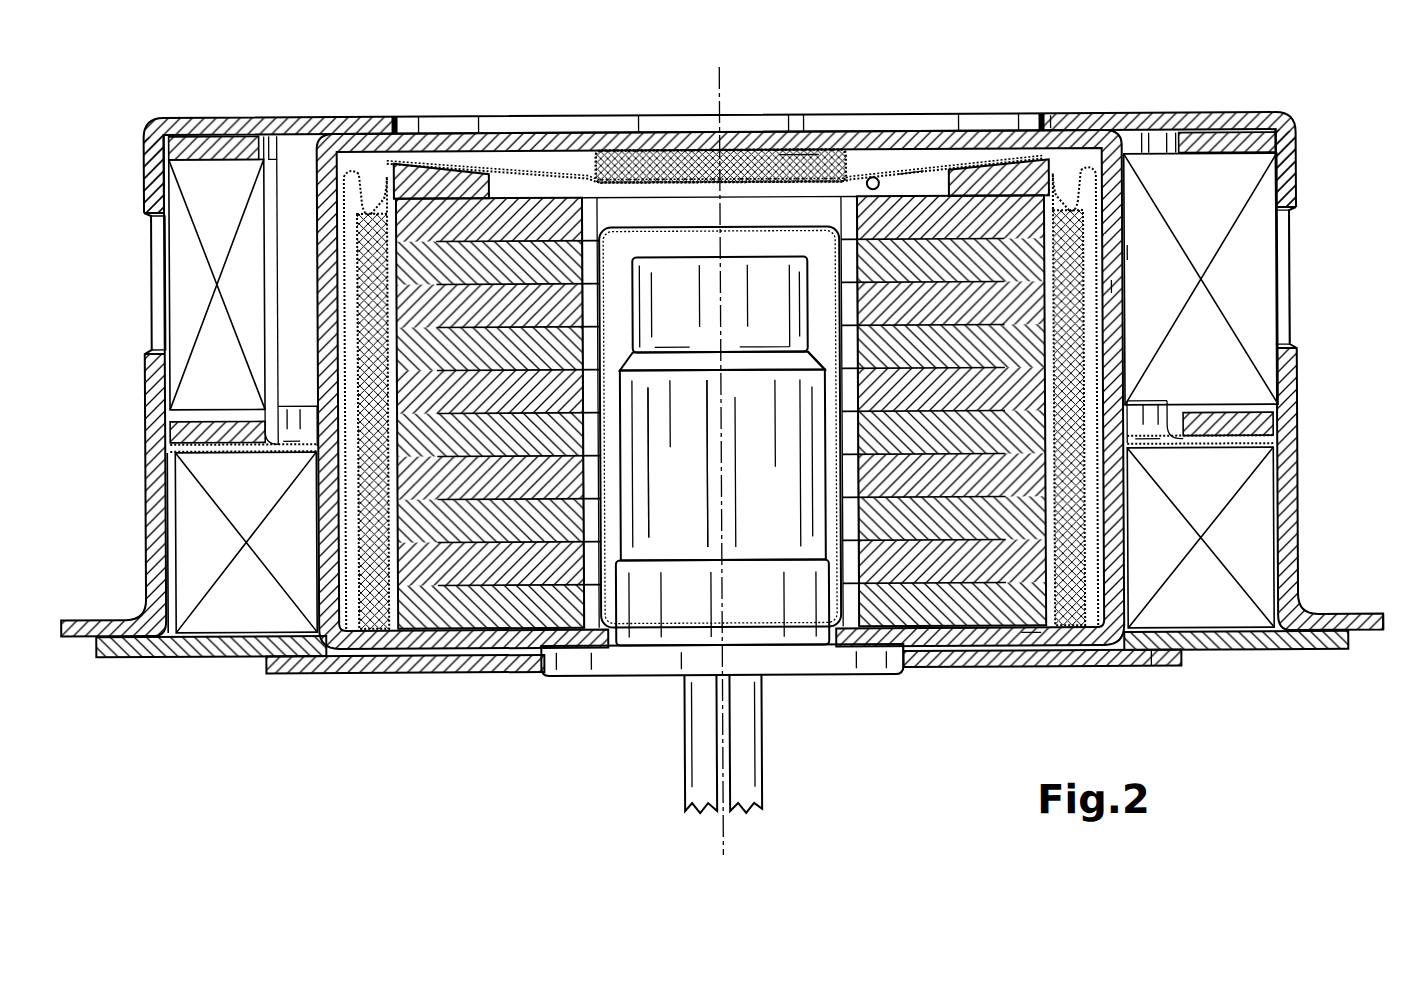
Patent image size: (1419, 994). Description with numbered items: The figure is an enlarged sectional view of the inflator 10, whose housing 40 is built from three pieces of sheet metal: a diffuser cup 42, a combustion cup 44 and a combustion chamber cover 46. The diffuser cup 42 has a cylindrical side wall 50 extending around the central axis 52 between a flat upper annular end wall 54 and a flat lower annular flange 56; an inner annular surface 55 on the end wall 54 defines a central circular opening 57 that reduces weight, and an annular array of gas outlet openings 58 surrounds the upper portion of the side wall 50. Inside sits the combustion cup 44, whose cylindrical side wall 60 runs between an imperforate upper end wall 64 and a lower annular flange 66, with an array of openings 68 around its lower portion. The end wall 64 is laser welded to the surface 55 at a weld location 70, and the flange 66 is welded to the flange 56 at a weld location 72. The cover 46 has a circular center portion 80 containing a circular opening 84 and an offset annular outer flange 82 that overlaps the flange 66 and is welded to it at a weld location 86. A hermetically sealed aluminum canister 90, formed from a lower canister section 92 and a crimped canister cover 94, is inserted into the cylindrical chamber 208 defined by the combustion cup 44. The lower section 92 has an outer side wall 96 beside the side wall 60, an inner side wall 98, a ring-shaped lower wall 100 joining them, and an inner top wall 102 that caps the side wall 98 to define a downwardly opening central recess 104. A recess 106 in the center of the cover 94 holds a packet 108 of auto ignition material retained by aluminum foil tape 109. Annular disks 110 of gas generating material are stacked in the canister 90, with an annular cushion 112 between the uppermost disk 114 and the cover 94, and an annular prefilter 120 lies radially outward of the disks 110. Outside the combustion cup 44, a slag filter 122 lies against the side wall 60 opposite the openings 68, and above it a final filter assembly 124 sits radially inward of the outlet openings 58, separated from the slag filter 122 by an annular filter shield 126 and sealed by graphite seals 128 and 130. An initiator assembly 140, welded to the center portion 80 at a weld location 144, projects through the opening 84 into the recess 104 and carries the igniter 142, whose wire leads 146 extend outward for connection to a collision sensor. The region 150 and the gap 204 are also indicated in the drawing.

The inflator 10 is at (276, 92).
The housing 40 is at (146, 463).
The diffuser cup 42 is at (69, 644).
The combustion cup 44 is at (185, 660).
The combustion chamber cover 46 is at (300, 680).
The side wall 50 is at (1292, 387).
The central axis 52 is at (719, 76).
The upper annular end wall 54 is at (1170, 118).
The inner annular surface 55 is at (398, 130).
The lower annular flange 56 is at (1340, 628).
The central circular opening 57 is at (545, 125).
The gas outlet openings 58 is at (158, 290).
The side wall 60 is at (1114, 293).
The upper end wall 64 is at (985, 130).
The lower annular flange 66 is at (1256, 652).
The openings 68 is at (332, 572).
The weld location 70 is at (1060, 120).
The weld location 72 is at (1357, 640).
The center portion 80 is at (1033, 645).
The annular outer flange 82 is at (1152, 670).
The circular opening 84 is at (828, 646).
The weld location 86 is at (1200, 668).
The canister 90 is at (937, 160).
The lower canister section 92 is at (836, 440).
The canister cover 94 is at (910, 172).
The outer side wall 96 is at (1126, 258).
The inner side wall 98 is at (836, 342).
The lower wall 100 is at (968, 630).
The inner top wall 102 is at (668, 240).
The central recess 104 is at (702, 242).
The recess 106 is at (800, 156).
The packet of auto ignition material 108 is at (640, 160).
The aluminum foil tape 109 is at (872, 181).
The annular disks of gas generating material 110 is at (898, 572).
The annular cushion 112 is at (1044, 120).
The uppermost gas generating disk 114 is at (460, 222).
The annular prefilter 120 is at (1082, 324).
The slag filter 122 is at (1215, 522).
The final filter assembly 124 is at (1237, 187).
The annular filter shield 126 is at (1276, 448).
The annular graphite seal 128 is at (1222, 142).
The annular graphite seal 130 is at (1267, 426).
The initiator assembly 140 is at (640, 722).
The igniter 142 is at (753, 257).
The weld location 144 is at (905, 668).
The wire leads 146 is at (740, 795).
The mounting flange 150 is at (590, 686).
The air gap 204 is at (292, 203).
The cylindrical chamber 208 is at (1068, 155).